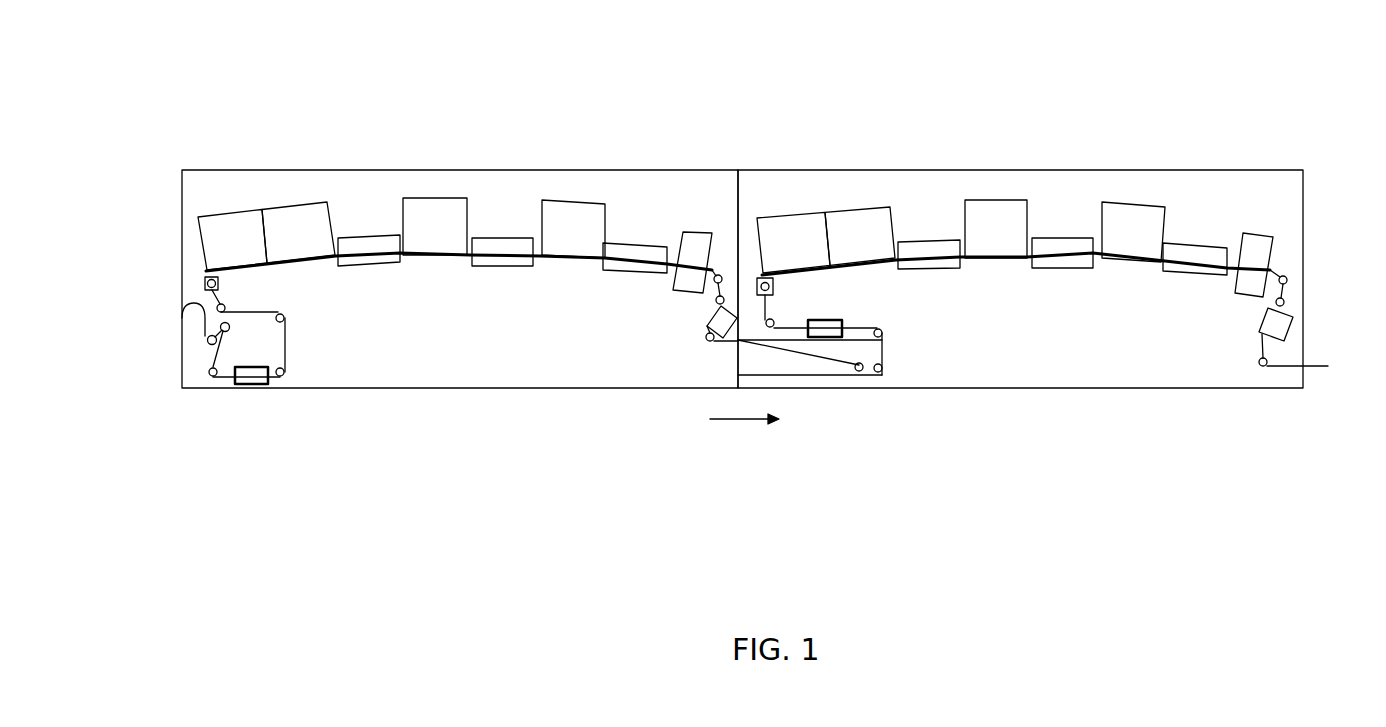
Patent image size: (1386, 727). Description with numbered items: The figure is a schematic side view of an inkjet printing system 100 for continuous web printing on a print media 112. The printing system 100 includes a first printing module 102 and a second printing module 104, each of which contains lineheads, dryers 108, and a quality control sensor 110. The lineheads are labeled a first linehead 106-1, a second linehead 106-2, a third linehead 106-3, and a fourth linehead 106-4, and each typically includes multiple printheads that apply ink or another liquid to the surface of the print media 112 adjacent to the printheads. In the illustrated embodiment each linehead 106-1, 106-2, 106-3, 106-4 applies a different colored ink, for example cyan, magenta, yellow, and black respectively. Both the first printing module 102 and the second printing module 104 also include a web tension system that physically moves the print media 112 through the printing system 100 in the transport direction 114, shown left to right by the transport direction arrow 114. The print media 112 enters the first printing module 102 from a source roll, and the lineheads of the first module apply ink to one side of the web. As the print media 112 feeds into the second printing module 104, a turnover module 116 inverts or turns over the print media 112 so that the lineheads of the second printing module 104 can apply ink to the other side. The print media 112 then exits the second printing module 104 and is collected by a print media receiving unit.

The printing system 100 is at (789, 70).
The first printing module 102 is at (663, 170).
The second printing module 104 is at (1222, 170).
The first linehead 106-1 is at (222, 216).
The second linehead 106-2 is at (309, 205).
The third linehead 106-3 is at (437, 198).
The fourth linehead 106-4 is at (575, 200).
The dryer 108 is at (383, 268).
The quality control sensor 110 is at (703, 232).
The print media 112 is at (169, 353).
The transport direction arrow 114 is at (741, 423).
The turnover module 116 is at (884, 349).